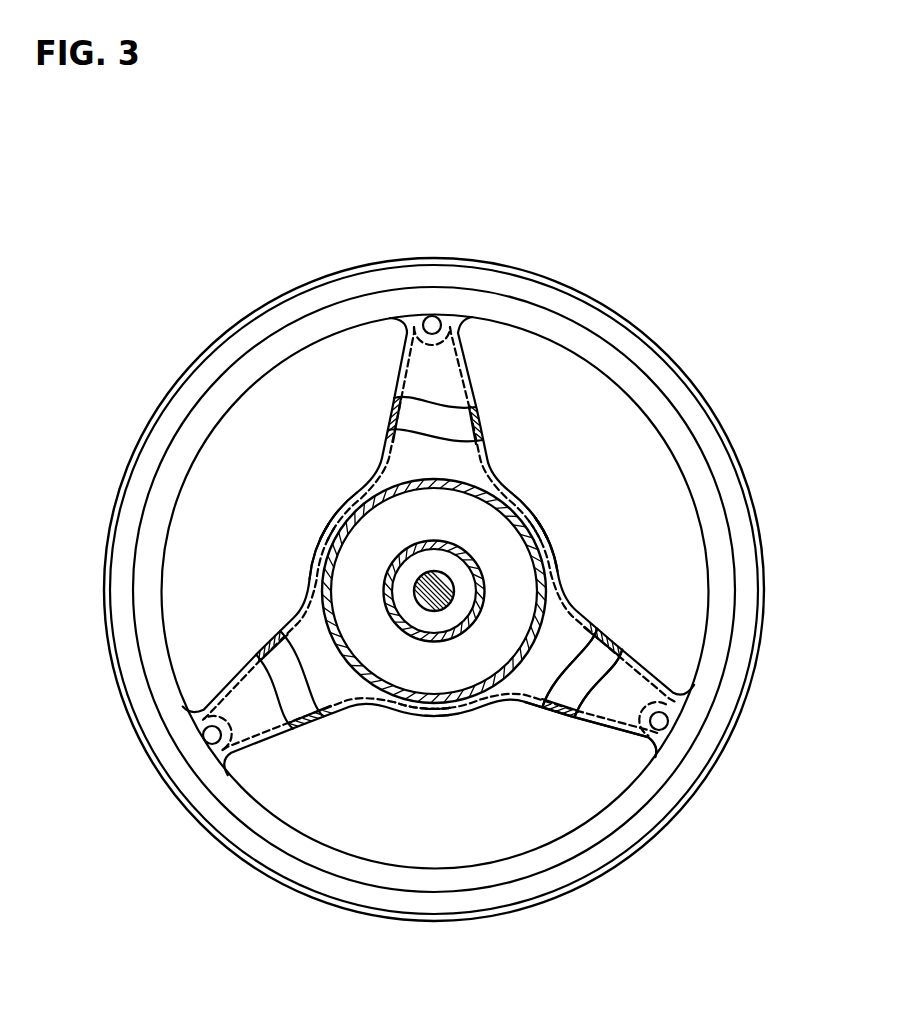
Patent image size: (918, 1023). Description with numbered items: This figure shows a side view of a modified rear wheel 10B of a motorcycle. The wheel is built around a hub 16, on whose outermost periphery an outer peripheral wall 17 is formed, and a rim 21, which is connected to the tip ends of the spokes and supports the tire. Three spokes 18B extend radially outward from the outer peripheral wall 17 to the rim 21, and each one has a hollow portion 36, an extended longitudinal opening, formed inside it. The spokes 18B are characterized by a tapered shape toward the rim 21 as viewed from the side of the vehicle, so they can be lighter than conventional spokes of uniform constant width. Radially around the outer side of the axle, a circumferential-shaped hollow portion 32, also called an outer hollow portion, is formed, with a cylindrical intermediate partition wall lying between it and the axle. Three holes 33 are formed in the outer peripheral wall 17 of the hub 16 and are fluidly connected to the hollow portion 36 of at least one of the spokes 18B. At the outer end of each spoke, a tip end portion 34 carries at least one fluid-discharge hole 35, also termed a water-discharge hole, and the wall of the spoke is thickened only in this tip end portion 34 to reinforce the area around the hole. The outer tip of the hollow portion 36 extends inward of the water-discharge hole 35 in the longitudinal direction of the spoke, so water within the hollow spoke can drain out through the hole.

The rear wheel 10B is at (632, 323).
The spokes 18B is at (483, 400).
The rim 21 is at (200, 363).
The hub 16 is at (522, 488).
The outer peripheral wall 17 is at (563, 550).
The circumferential-shaped hollow portion 32 is at (383, 653).
The holes 33 is at (320, 537).
The tip end portion 34 is at (609, 735).
The fluid-discharge hole 35 is at (668, 730).
The hollow portion 36 is at (572, 688).